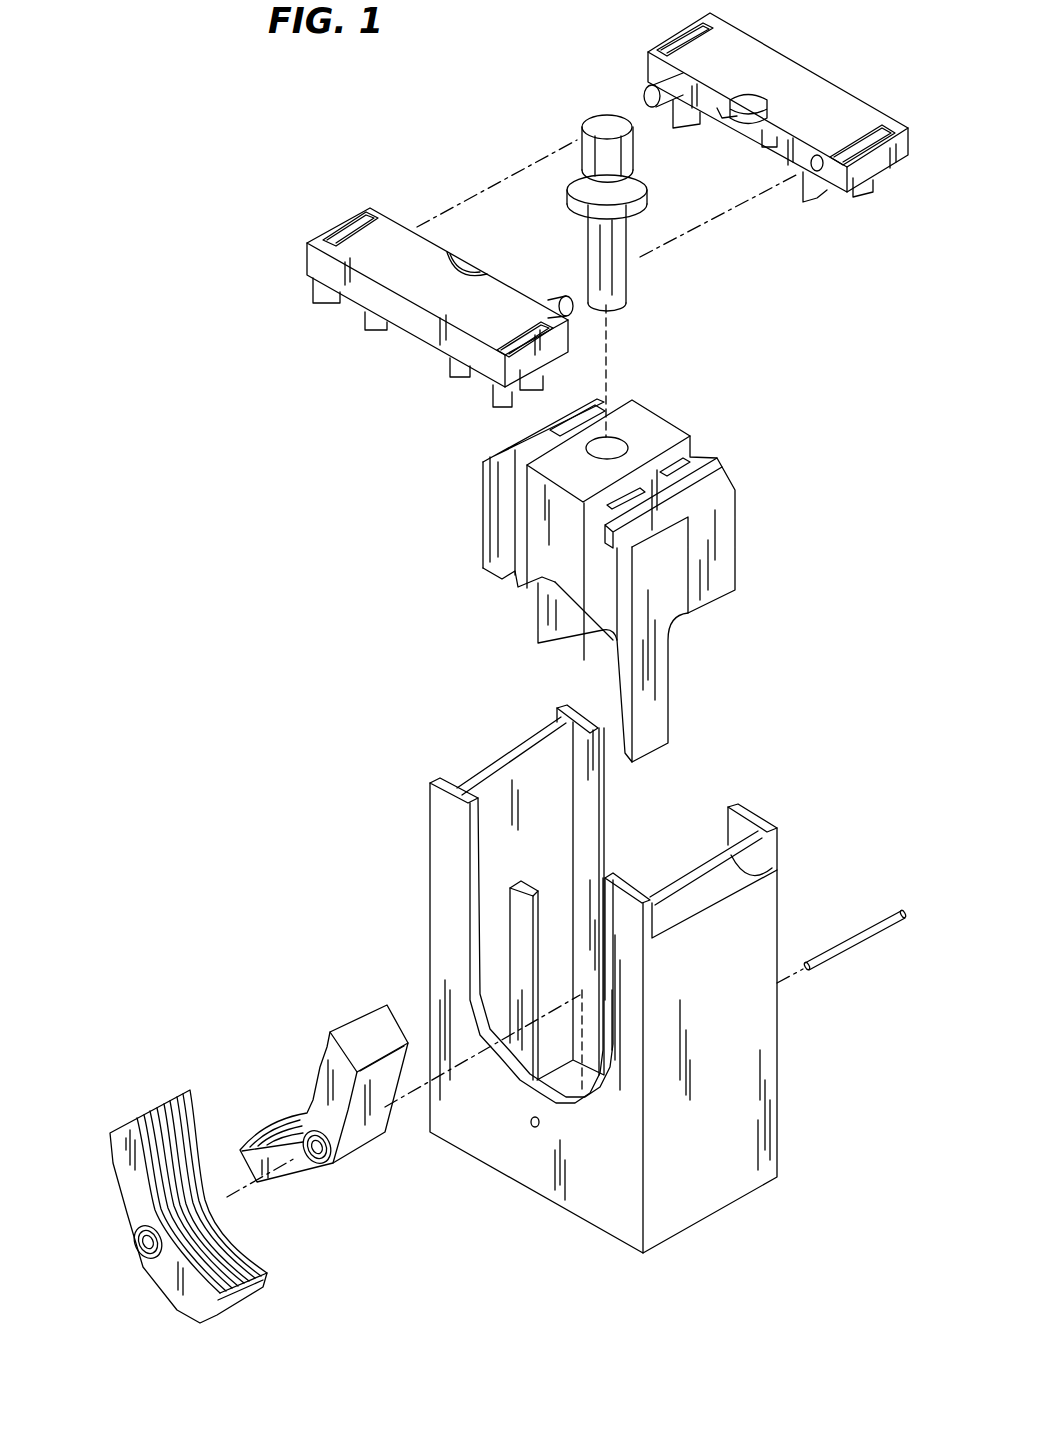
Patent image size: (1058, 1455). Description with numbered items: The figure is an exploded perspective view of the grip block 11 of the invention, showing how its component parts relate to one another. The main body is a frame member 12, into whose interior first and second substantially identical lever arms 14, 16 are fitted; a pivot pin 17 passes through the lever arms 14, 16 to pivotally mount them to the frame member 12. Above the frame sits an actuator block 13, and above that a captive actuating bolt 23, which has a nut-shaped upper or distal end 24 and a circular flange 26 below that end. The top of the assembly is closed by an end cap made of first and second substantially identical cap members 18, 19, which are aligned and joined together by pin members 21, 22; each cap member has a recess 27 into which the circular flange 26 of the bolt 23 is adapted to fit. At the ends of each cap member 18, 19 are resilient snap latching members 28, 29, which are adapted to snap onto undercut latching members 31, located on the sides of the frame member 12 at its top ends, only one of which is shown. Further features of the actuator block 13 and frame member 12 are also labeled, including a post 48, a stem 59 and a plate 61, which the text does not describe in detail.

The grip block 11 is at (213, 552).
The frame member 12 is at (768, 932).
The actuator block 13 is at (712, 548).
The first lever arm 14 is at (125, 1163).
The second lever arm 16 is at (362, 1022).
The pivot pin 17 is at (858, 948).
The first cap member 18 is at (428, 338).
The second cap member 19 is at (830, 95).
The pin member 21 is at (578, 318).
The pin member 22 is at (647, 62).
The captive actuating bolt 23 is at (622, 250).
The nut-shaped upper end 24 is at (585, 148).
The circular flange 26 is at (576, 203).
The recess 27 is at (750, 128).
The resilient snap latching member 28 is at (672, 107).
The resilient snap latching member 29 is at (890, 193).
The undercut latching member 31 is at (770, 866).
The post 48 is at (513, 937).
The stem 59 is at (668, 726).
The plate 61 is at (536, 620).